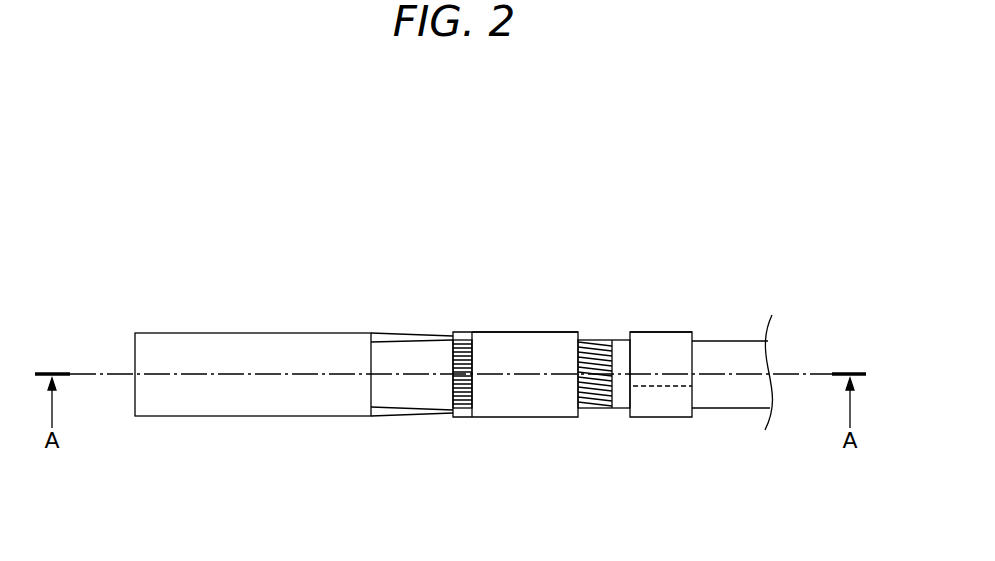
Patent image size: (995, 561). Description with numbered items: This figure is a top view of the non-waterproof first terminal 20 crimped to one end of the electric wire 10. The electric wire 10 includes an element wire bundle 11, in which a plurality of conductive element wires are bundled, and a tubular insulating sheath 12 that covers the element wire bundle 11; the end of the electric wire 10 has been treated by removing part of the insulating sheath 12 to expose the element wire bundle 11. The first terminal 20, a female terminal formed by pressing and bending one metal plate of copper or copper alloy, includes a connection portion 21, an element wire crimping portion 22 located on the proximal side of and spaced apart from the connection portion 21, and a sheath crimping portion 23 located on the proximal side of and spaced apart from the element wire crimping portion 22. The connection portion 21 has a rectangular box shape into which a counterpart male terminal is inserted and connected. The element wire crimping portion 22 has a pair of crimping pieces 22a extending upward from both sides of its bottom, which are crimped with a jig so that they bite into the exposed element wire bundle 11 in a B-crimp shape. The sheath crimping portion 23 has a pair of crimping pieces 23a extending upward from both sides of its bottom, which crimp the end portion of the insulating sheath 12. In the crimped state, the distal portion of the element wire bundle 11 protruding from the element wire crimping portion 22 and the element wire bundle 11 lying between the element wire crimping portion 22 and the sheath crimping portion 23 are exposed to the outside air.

The electric wire 10 is at (738, 319).
The element wire bundle 11 is at (465, 343).
The insulating sheath 12 is at (745, 337).
The first terminal 20 is at (294, 371).
The connection portion 21 is at (252, 417).
The element wire crimping portion 22 is at (515, 371).
The crimping pieces 22a is at (508, 397).
The sheath crimping portion 23 is at (661, 371).
The crimping pieces 23a is at (648, 405).